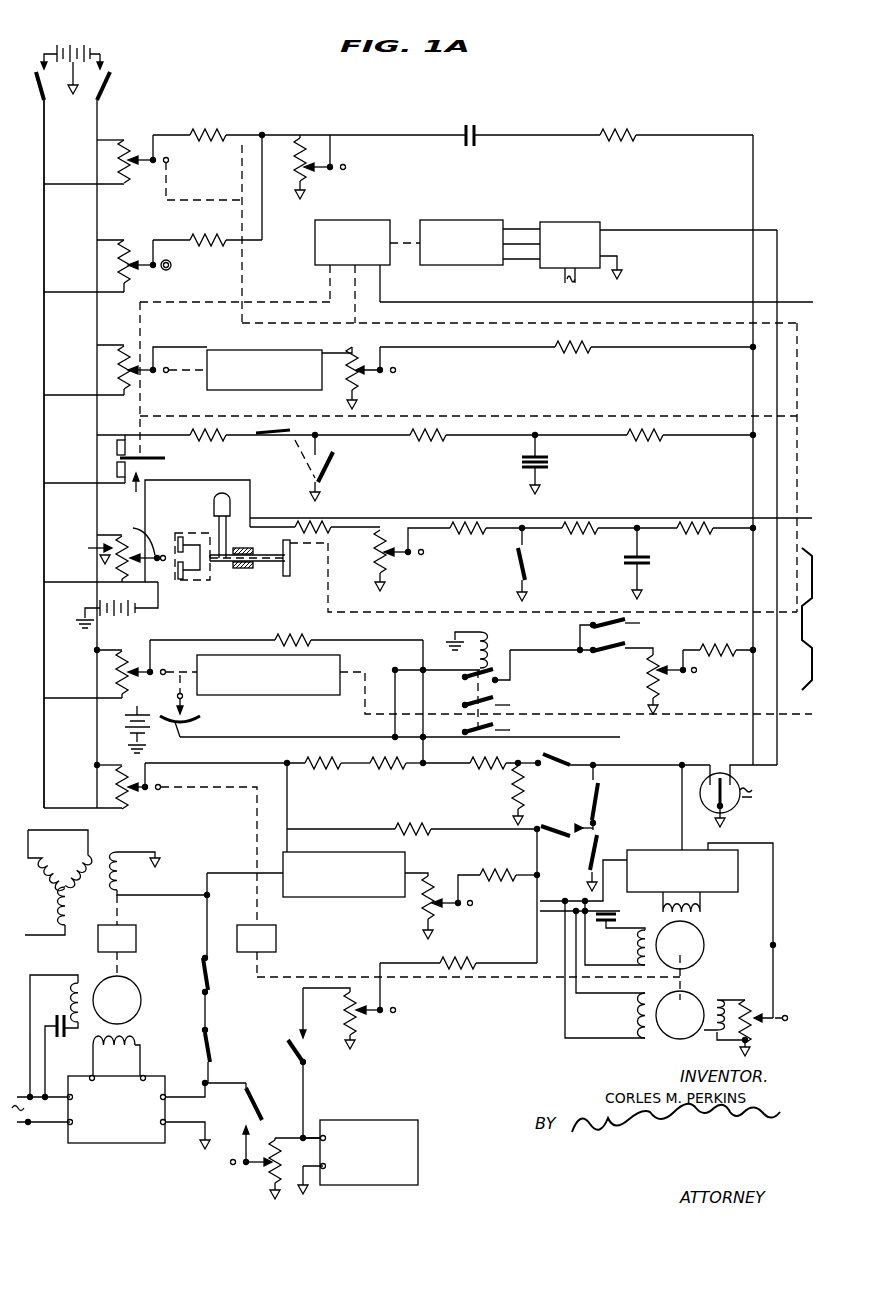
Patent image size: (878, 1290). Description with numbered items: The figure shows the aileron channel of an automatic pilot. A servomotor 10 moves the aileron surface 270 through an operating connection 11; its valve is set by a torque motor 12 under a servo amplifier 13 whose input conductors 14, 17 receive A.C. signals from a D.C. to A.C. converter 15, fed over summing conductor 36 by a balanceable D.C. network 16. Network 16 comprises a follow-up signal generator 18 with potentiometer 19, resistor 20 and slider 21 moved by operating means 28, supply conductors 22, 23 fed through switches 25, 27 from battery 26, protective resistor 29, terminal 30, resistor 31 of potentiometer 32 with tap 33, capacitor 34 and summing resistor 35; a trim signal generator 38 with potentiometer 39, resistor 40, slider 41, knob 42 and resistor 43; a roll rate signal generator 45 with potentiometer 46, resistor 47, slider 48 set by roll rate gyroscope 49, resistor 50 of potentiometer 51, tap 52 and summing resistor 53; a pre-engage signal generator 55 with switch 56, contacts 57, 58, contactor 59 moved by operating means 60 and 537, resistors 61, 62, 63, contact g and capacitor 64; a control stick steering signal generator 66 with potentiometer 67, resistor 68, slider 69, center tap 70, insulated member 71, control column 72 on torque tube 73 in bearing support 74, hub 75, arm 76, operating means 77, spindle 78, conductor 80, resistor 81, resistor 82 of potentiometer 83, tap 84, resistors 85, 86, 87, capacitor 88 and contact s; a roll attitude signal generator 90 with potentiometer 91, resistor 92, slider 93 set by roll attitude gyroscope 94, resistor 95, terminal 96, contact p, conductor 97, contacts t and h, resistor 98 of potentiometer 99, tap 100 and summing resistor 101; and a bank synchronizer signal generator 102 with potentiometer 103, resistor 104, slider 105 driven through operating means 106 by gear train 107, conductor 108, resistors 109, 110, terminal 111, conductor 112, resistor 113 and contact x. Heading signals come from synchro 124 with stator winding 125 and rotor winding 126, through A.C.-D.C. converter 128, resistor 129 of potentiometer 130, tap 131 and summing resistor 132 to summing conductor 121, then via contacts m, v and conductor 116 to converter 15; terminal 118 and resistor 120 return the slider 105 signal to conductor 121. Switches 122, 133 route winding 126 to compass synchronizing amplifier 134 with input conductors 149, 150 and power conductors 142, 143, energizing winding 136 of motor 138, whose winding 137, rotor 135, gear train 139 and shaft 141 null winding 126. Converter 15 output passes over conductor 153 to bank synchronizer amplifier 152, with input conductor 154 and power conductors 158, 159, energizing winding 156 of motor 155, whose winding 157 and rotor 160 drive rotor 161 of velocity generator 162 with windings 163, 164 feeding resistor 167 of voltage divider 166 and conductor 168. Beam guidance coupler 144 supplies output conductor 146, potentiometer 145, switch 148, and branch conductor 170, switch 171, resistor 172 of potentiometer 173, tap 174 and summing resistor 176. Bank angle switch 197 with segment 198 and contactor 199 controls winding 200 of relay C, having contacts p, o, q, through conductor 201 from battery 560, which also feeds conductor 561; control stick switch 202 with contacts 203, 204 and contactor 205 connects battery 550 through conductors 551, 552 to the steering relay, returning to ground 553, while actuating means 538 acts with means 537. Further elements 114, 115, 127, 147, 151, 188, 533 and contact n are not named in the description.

The servomotor 10 is at (360, 220).
The operating connection 11 is at (406, 323).
The torque motor 12 is at (452, 220).
The servo amplifier 13 is at (562, 222).
The signal input conductor 14 is at (652, 230).
The D.C. to A.C. converter 15 is at (730, 778).
The balanceable D.C. signal network 16 is at (720, 378).
The signal input conductor 17 is at (620, 256).
The follow-up signal generator 18 is at (80, 173).
The follow-up potentiometer 19 is at (140, 170).
The resistor 20 is at (115, 161).
The slider 21 is at (172, 149).
The D.C. supply conductor 22 is at (97, 140).
The second D.C. supply conductor 23 is at (44, 252).
The single pole switch 25 is at (118, 60).
The battery 26 is at (86, 28).
The single pole switch 27 is at (40, 62).
The operating means 28 is at (242, 192).
The protective resistor 29 is at (190, 135).
The terminal 30 is at (262, 135).
The resistor 31 is at (294, 165).
The voltage dividing potentiometer 32 is at (316, 172).
The adjustable tap 33 is at (344, 167).
The capacitor 34 is at (456, 130).
The summing resistor 35 is at (600, 135).
The summing conductor 36 is at (753, 197).
The trim signal generator 38 is at (79, 261).
The trim potentiometer 39 is at (137, 272).
The resistor 40 is at (113, 266).
The slider 41 is at (153, 262).
The knob 42 is at (172, 267).
The resistor 43 is at (200, 240).
The roll rate signal generator 45 is at (81, 378).
The roll rate potentiometer 46 is at (138, 375).
The resistor 47 is at (113, 370).
The slider 48 is at (158, 368).
The roll rate gyroscope 49 is at (245, 390).
The resistor 50 is at (340, 378).
The voltage dividing potentiometer 51 is at (365, 378).
The adjustable tap 52 is at (390, 363).
The summing resistor 53 is at (560, 350).
The pre-engage trim signal generator 55 is at (79, 459).
The switch 56 is at (124, 487).
The contact 57 is at (110, 446).
The contact 58 is at (110, 477).
The adjustable contactor 59 is at (160, 458).
The operating means 60 is at (140, 433).
The resistor 61 is at (237, 428).
The resistor 62 is at (425, 428).
The second resistor 63 is at (645, 428).
The capacitor 64 is at (528, 463).
The control stick steering signal generator 66 is at (79, 533).
The control stick steering operated potentiometer 67 is at (87, 552).
The resistor 68 is at (112, 557).
The adjustable slider 69 is at (124, 566).
The grounded center tap 70 is at (100, 560).
The insulated member 71 is at (148, 550).
The control column 72 is at (214, 502).
The torque tube 73 is at (268, 562).
The bearing support 74 is at (240, 547).
The hub 75 is at (290, 560).
The arm 76 is at (285, 544).
The operating means 77 is at (343, 610).
The spindle 78 is at (215, 562).
The conductor 80 is at (150, 487).
The resistor 81 is at (322, 527).
The resistor 82 is at (378, 545).
The voltage dividing potentiometer 83 is at (375, 553).
The adjustable tap 84 is at (408, 556).
The resistor 85 is at (452, 530).
The resistor 86 is at (578, 530).
The resistor 87 is at (698, 532).
The capacitor 88 is at (646, 562).
The roll attitude signal generator 90 is at (79, 678).
The potentiometer 91 is at (137, 678).
The resistor 92 is at (112, 673).
The adjustable slider 93 is at (150, 660).
The roll attitude gyroscope 94 is at (192, 668).
The resistor 95 is at (280, 640).
The terminal 96 is at (423, 680).
The conductor 97 is at (540, 650).
The resistor 98 is at (650, 672).
The voltage dividing potentiometer 99 is at (670, 678).
The adjustable tap 100 is at (697, 670).
The summing resistor 101 is at (715, 650).
The bank synchronizer signal generator 102 is at (86, 793).
The bank synchronizing potentiometer 103 is at (137, 792).
The resistor 104 is at (107, 786).
The adjustable slider 105 is at (150, 785).
The operating means 106 is at (195, 787).
The gear train 107 is at (252, 925).
The conductor 108 is at (198, 763).
The resistor 109 is at (305, 763).
The resistor 110 is at (380, 770).
The terminal 111 is at (423, 770).
The conductor 112 is at (420, 758).
The resistor 113 is at (470, 770).
The junction 114 is at (515, 760).
The resistor 115 is at (512, 790).
The conductor 116 is at (625, 765).
The terminal 118 is at (285, 766).
The resistor 120 is at (398, 829).
The bank synchronizing control summing conductor 121 is at (537, 855).
The single pole single throw switch 122 is at (200, 968).
The synchro 124 is at (43, 913).
The three phase stator winding 125 is at (52, 880).
The single phase rotor winding 126 is at (117, 852).
The conductor 127 is at (205, 920).
The A.C.-D.C. converter 128 is at (313, 897).
The resistor 129 is at (418, 905).
The voltage dividing potentiometer 130 is at (440, 912).
The adjustable tap 131 is at (471, 902).
The summing resistor 132 is at (500, 878).
The single pole single throw switch 133 is at (210, 1045).
The compass synchronizing amplifier 134 is at (118, 1143).
The rotor 135 is at (133, 990).
The winding 136 is at (135, 1040).
The winding 137 is at (75, 978).
The capacitor type induction motor 138 is at (188, 1005).
The gear train 139 is at (124, 925).
The output shaft 141 is at (115, 925).
The A.C. power supply conductor 142 is at (66, 1098).
The A.C. power supply conductor 143 is at (60, 1123).
The localizer beam guidance coupler 144 is at (384, 1157).
The voltage dividing potentiometer 145 is at (260, 1168).
The coupler output conductor 146 is at (276, 1135).
The contact 147 is at (230, 1162).
The single pole single throw switch 148 is at (258, 1095).
The input conductor 149 is at (205, 1086).
The second input conductor 150 is at (205, 1125).
The terminal block 151 is at (572, 864).
The bank synchronizer amplifier 152 is at (660, 850).
The input conductor 153 is at (680, 805).
The signal input conductor 154 is at (773, 882).
The bank synchronizer motor 155 is at (746, 914).
The winding 156 is at (663, 912).
The winding 157 is at (641, 952).
The A.C. voltage power supply conductor 158 is at (562, 900).
The A.C. voltage power supply conductor 159 is at (572, 913).
The rotor 160 is at (704, 945).
The rotor 161 is at (680, 990).
The velocity signal generator 162 is at (628, 1019).
The primary winding 163 is at (644, 1040).
The secondary winding 164 is at (702, 1036).
The voltage divider 166 is at (766, 1026).
The resistor 167 is at (748, 1000).
The conductor 168 is at (773, 975).
The branch conductor 170 is at (303, 1088).
The single pole single throw switch 171 is at (290, 1038).
The resistor 172 is at (345, 1005).
The voltage dividing potentiometer 173 is at (368, 1018).
The adjustable tap 174 is at (385, 1008).
The summing resistor 176 is at (438, 963).
The mechanical linkage 188 is at (680, 714).
The bank angle responsive switch 197 is at (210, 720).
The segmental contact member 198 is at (180, 738).
The operable contactor 199 is at (185, 697).
The operating winding 200 is at (472, 632).
The conductor 201 is at (312, 737).
The control stick operated switch 202 is at (185, 521).
The contact 203 is at (178, 580).
The contact 204 is at (182, 549).
The operable contactor 205 is at (130, 532).
The aileron surface 270 is at (805, 690).
The conductor 533 is at (640, 302).
The operating means 537 is at (142, 314).
The actuating means 538 is at (476, 416).
The battery 550 is at (138, 610).
The conductor 551 is at (160, 604).
The conductor 552 is at (465, 518).
The battery ground 553 is at (85, 608).
The battery 560 is at (135, 728).
The conductor 561 is at (588, 737).
The relay C is at (510, 630).
The out contact g is at (290, 465).
The normally closed contact s is at (520, 545).
The out contact h is at (645, 622).
The out contact t is at (652, 648).
The in contact p is at (505, 679).
The out contact o is at (498, 701).
The out contact q is at (497, 726).
The in contact x is at (540, 768).
The out contact v is at (595, 790).
The in contact m is at (578, 825).
The switch n is at (596, 830).